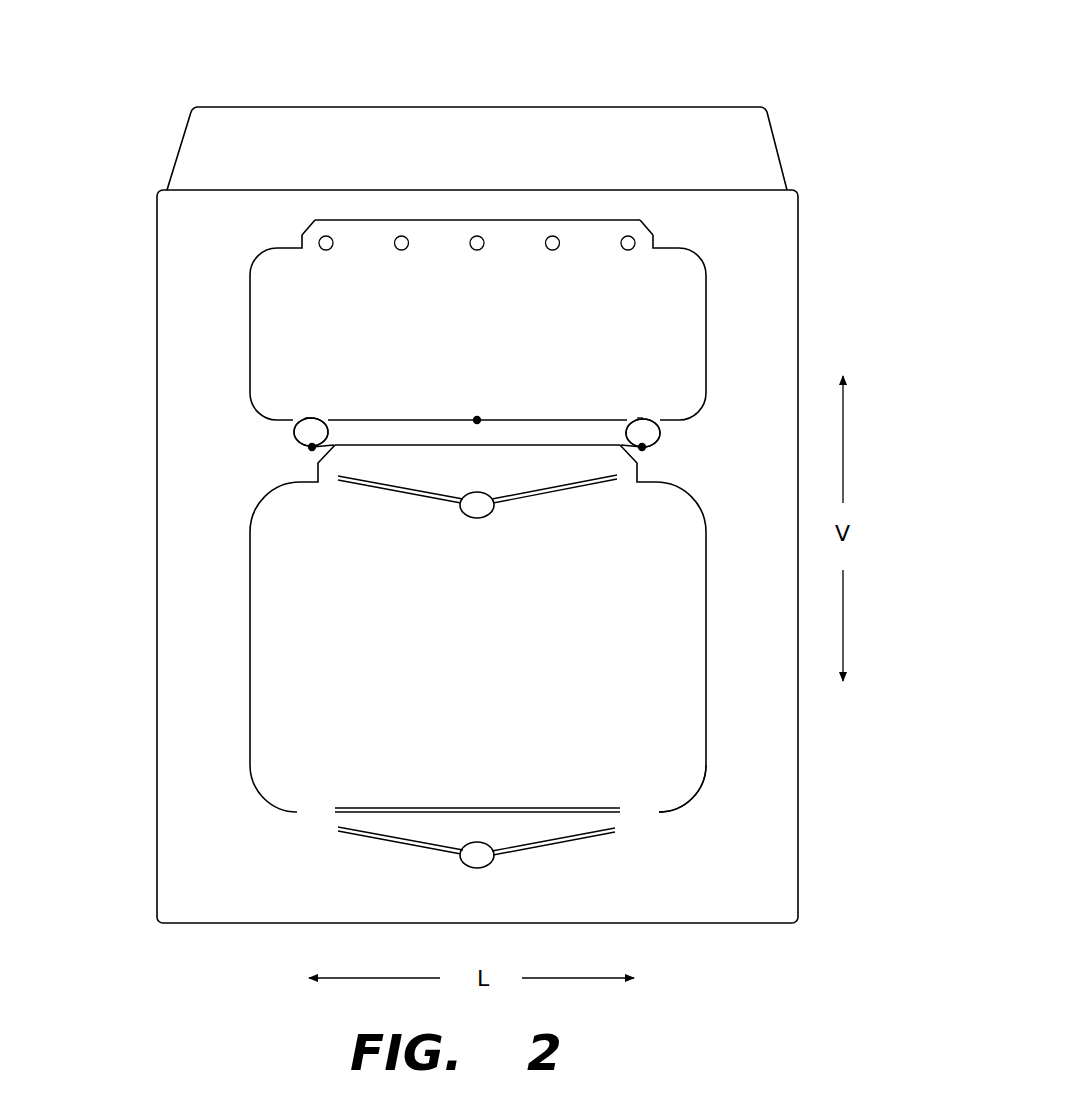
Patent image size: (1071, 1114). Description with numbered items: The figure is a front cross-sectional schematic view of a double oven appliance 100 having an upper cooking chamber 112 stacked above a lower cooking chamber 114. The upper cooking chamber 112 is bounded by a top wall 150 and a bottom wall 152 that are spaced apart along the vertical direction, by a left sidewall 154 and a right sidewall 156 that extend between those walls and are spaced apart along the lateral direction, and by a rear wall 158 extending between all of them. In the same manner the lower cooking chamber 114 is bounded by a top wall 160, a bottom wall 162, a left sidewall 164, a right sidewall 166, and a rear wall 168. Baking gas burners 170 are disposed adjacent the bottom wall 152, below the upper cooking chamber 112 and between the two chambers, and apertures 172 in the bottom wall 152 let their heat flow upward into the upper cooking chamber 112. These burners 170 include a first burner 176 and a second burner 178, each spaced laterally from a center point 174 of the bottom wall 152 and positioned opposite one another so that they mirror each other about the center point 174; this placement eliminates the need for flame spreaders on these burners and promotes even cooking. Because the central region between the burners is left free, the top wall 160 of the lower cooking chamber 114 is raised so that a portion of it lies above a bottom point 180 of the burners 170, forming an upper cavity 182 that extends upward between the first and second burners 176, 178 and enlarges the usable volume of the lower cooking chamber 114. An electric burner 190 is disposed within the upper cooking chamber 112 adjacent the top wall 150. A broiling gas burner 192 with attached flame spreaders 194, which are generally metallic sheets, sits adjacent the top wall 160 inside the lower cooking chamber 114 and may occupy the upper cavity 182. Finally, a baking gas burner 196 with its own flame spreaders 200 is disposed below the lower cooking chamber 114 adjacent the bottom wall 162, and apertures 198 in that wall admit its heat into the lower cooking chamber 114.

The double oven appliance 100 is at (666, 78).
The upper cooking chamber 112 is at (495, 281).
The lower cooking chamber 114 is at (493, 652).
The top wall 150 is at (450, 224).
The bottom wall 152 is at (517, 420).
The left sidewall 154 is at (251, 293).
The right sidewall 156 is at (705, 293).
The rear wall 158 is at (665, 282).
The top wall 160 is at (388, 447).
The bottom wall 162 is at (507, 808).
The left sidewall 164 is at (251, 575).
The right sidewall 166 is at (705, 577).
The rear wall 168 is at (680, 673).
The baking gas burners 170 is at (292, 441).
The apertures 172 is at (305, 414).
The center point 174 is at (477, 409).
The first burner 176 is at (312, 427).
The second burner 178 is at (640, 427).
The bottom point 180 is at (309, 455).
The upper cavity 182 is at (483, 509).
The electric burner 190 is at (488, 242).
The broiling gas burner 192 is at (478, 522).
The flame spreaders 194 is at (400, 490).
The baking gas burner 196 is at (479, 876).
The apertures 198 is at (317, 817).
The flame spreaders 200 is at (393, 840).